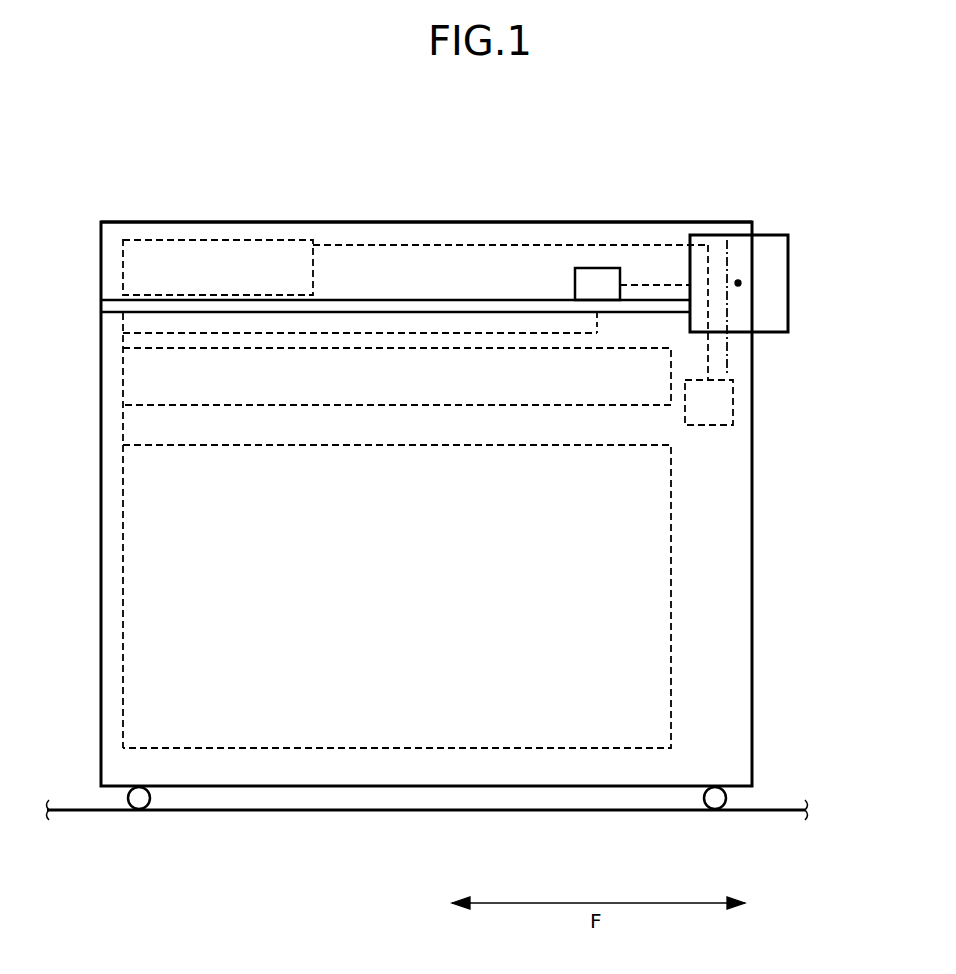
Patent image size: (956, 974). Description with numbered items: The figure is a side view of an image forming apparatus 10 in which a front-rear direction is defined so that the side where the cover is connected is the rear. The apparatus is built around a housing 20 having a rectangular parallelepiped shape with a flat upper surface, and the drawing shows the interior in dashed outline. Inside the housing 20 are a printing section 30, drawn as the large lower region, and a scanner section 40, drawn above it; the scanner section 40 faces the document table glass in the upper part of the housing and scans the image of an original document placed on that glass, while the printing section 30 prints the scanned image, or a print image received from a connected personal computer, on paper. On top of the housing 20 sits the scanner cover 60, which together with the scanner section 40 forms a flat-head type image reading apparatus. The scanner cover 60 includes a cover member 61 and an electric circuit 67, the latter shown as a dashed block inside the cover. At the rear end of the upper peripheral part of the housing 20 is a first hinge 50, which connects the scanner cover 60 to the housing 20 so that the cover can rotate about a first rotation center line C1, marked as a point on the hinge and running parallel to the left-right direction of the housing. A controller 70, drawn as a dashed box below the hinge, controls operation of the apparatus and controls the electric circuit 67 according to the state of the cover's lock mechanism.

The image forming apparatus 10 is at (727, 222).
The housing 20 is at (738, 634).
The printing section 30 is at (650, 562).
The scanner section 40 is at (135, 378).
The first hinge 50 is at (773, 308).
The scanner cover 60 is at (522, 229).
The cover member 61 is at (411, 229).
The electric circuit 67 is at (237, 240).
The controller 70 is at (718, 402).
The first rotation center line C1 is at (738, 283).